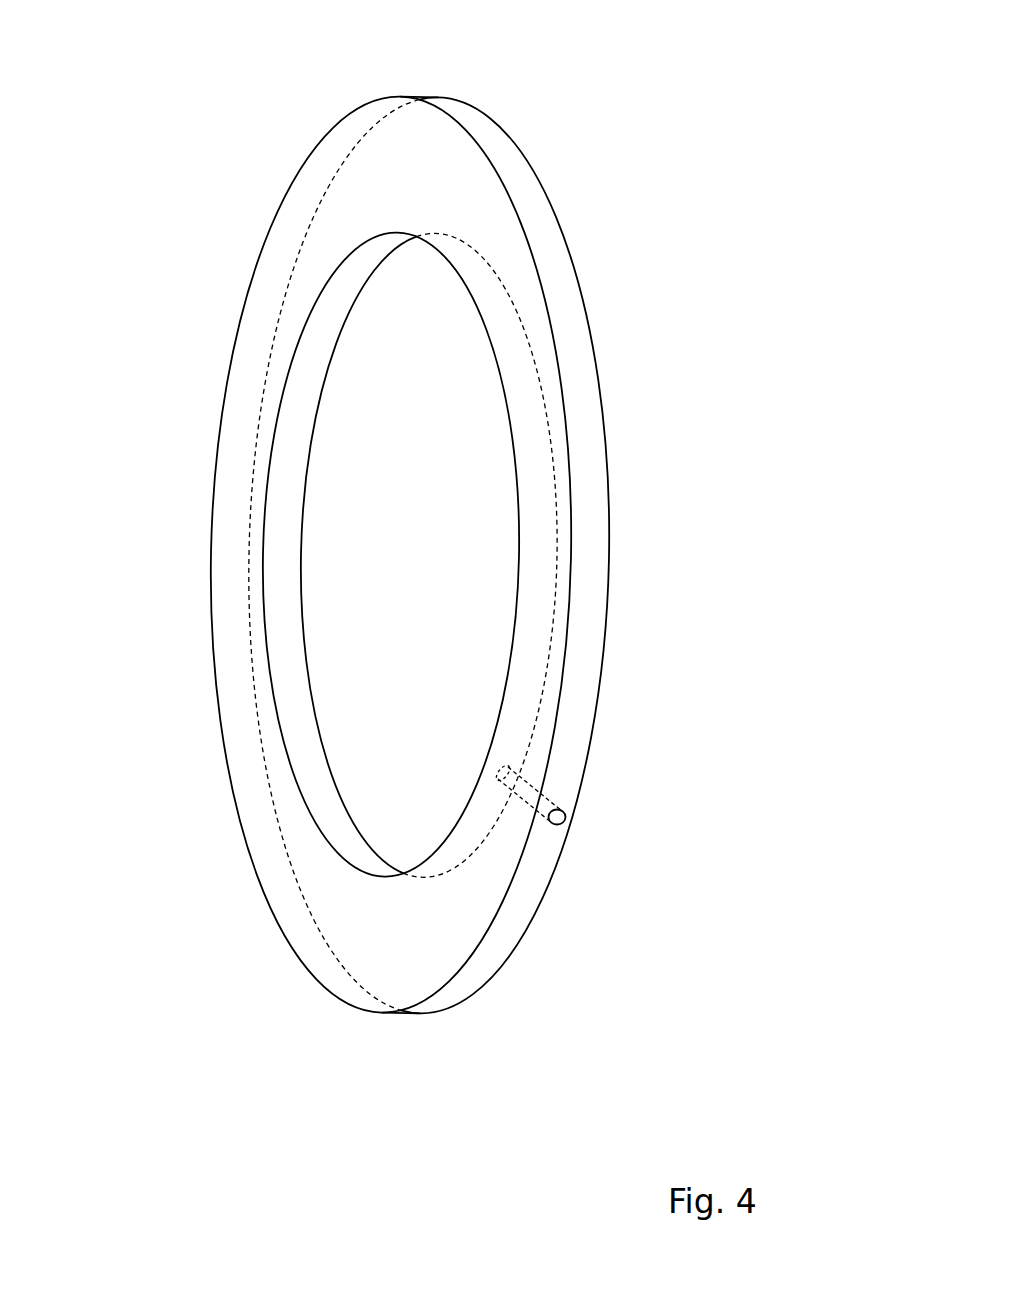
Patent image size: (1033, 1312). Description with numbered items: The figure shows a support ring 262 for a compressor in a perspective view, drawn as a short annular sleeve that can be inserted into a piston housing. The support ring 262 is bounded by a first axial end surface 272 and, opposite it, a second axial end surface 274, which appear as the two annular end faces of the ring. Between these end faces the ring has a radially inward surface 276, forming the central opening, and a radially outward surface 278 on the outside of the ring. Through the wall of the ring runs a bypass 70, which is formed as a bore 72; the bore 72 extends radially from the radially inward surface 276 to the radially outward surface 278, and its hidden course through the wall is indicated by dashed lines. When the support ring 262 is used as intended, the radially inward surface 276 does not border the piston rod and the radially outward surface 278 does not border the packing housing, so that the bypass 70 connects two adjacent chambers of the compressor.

The support ring 262 is at (548, 62).
The first axial end surface 272 is at (323, 223).
The second axial end surface 274 is at (607, 430).
The radially inward surface 276 is at (342, 298).
The radially outward surface 278 is at (590, 655).
The bypass 70 is at (593, 810).
The bore 72 is at (520, 792).